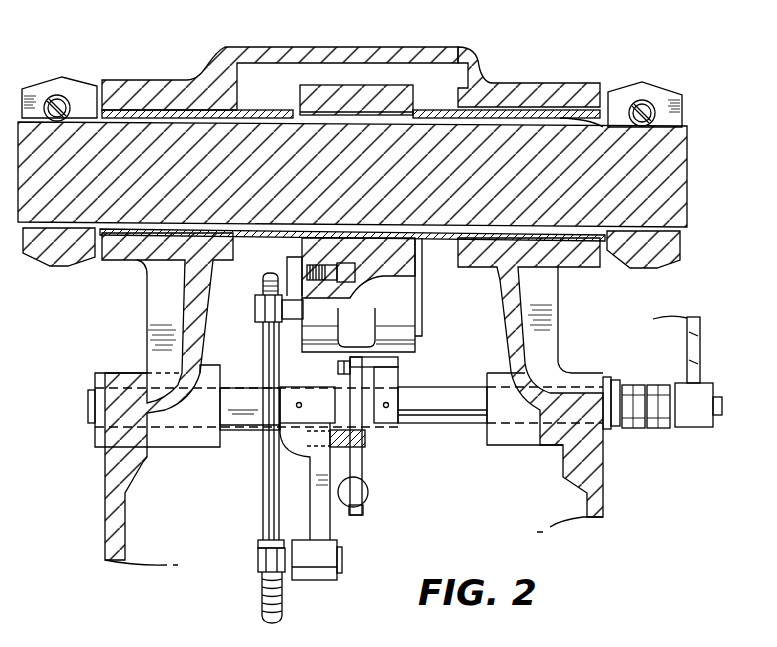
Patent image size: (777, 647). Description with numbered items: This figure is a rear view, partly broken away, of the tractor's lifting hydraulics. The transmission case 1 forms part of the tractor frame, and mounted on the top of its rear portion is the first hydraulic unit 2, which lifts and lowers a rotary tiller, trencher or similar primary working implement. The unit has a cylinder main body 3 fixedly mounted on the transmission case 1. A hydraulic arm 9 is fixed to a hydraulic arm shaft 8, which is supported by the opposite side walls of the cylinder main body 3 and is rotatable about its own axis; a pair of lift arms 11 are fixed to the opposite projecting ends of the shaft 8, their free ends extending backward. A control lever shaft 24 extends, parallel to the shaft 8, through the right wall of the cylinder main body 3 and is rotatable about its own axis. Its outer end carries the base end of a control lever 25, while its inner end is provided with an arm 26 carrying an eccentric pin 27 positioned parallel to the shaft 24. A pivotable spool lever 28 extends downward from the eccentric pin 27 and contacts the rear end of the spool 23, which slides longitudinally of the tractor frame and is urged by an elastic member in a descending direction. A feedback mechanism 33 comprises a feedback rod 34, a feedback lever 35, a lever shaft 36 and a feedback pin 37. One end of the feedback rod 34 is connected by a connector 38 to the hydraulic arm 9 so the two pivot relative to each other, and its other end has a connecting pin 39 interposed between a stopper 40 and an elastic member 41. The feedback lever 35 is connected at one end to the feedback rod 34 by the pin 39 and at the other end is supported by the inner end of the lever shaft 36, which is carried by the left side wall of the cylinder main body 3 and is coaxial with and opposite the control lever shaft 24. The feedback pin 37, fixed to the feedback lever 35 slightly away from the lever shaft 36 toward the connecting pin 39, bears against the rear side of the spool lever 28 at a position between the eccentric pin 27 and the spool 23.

The transmission case 1 is at (105, 508).
The first hydraulic unit 2 is at (476, 45).
The cylinder main body 3 is at (257, 52).
The hydraulic arm shaft 8 is at (534, 117).
The hydraulic arm 9 is at (372, 86).
The lift arms 11 is at (47, 262).
The spool 23 is at (368, 492).
The control lever shaft 24 is at (462, 395).
The control lever 25 is at (700, 345).
The arm 26 is at (393, 413).
The eccentric pin 27 is at (338, 368).
The spool lever 28 is at (355, 515).
The feedback mechanism 33 is at (255, 461).
The feedback rod 34 is at (258, 488).
The feedback lever 35 is at (327, 514).
The lever shaft 36 is at (245, 400).
The feedback pin 37 is at (340, 438).
The connector 38 is at (258, 299).
The connecting pin 39 is at (258, 561).
The stopper 40 is at (258, 542).
The elastic member 41 is at (258, 591).